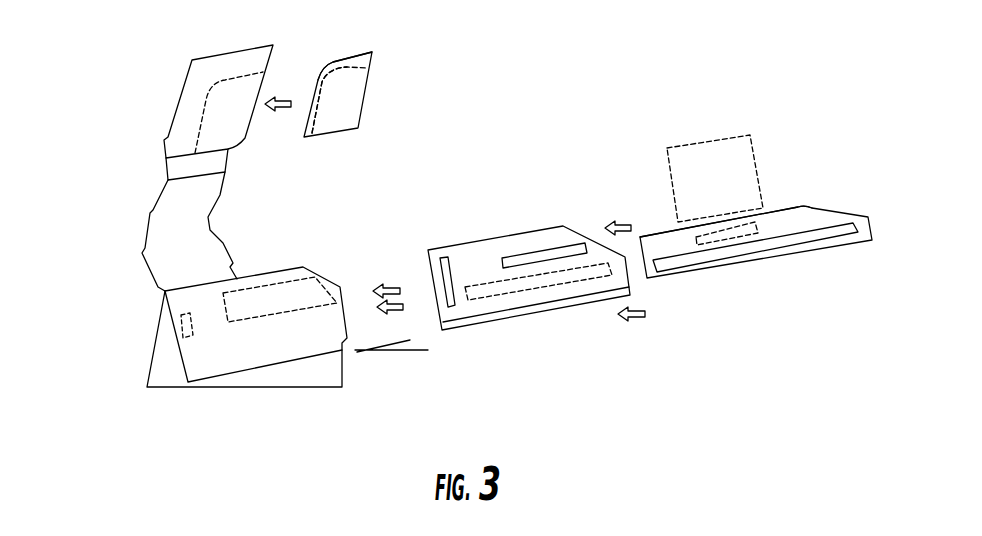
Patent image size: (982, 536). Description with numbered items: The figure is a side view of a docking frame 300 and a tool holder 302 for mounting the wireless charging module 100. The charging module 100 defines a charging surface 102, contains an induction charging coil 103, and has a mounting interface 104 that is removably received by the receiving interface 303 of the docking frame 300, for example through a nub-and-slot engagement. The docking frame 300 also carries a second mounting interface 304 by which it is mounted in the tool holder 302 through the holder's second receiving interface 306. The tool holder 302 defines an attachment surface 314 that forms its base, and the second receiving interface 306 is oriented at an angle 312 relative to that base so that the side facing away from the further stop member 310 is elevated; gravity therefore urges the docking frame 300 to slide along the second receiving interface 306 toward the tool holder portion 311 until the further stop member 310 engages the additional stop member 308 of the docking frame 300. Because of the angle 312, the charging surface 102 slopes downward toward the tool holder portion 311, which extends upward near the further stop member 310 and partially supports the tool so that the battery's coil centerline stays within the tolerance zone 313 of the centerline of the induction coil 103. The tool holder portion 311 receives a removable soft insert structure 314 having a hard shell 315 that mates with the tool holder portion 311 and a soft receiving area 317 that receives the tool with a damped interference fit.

The wireless charging module 100 is at (748, 279).
The charging surface 102 is at (770, 210).
The induction charging coil 103 is at (695, 240).
The mounting interface 104 is at (808, 227).
The docking frame 300 is at (546, 329).
The tool holder 302 is at (187, 179).
The receiving interface 303 is at (626, 283).
The second mounting interface 304 is at (485, 252).
The second receiving interface 306 is at (322, 281).
The additional stop member 308 is at (450, 307).
The further stop member 310 is at (181, 327).
The tool holder portion 311 is at (255, 197).
The angle 312 is at (388, 340).
The tolerance zone 313 is at (738, 135).
The soft insert structure 314 is at (230, 385).
The hard surface or shell 315 is at (352, 55).
The soft receiving area 317 is at (347, 68).